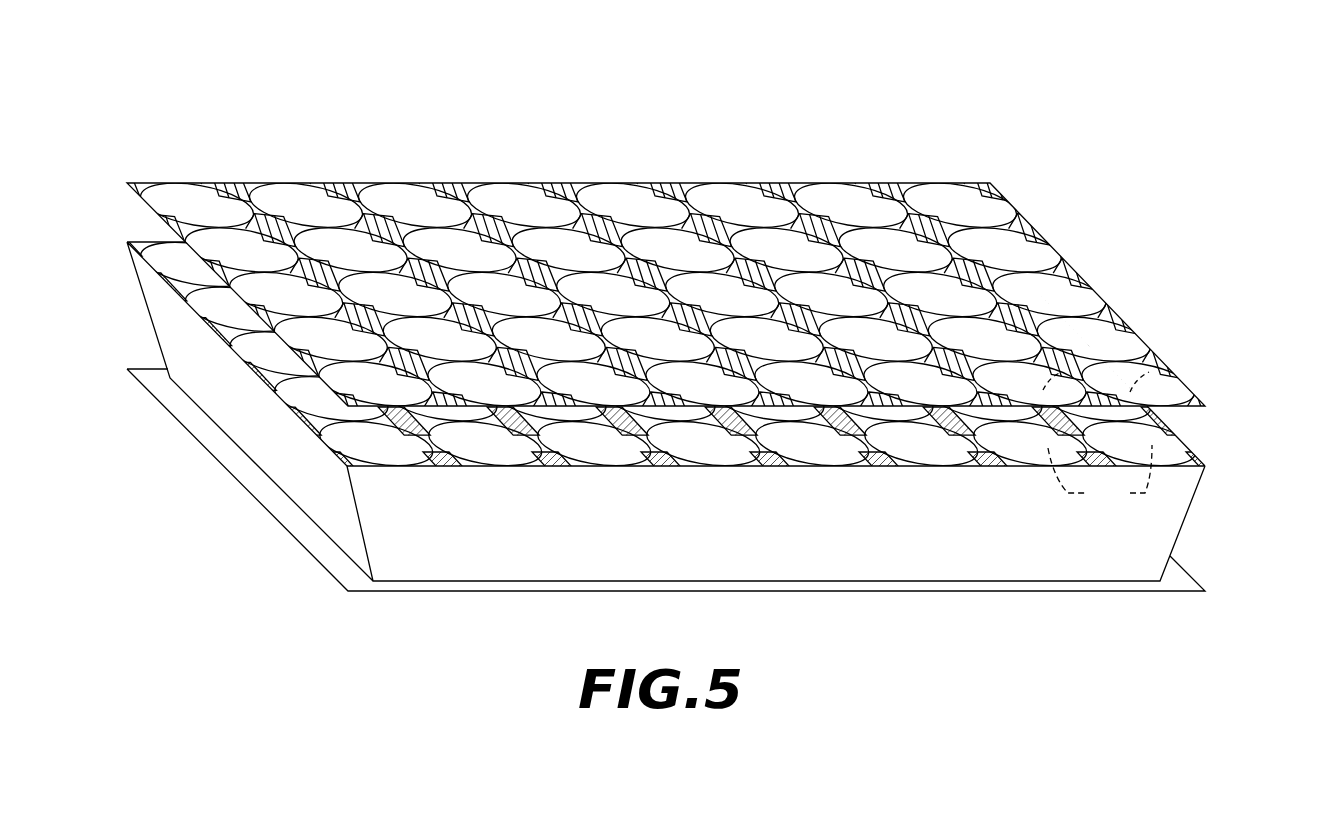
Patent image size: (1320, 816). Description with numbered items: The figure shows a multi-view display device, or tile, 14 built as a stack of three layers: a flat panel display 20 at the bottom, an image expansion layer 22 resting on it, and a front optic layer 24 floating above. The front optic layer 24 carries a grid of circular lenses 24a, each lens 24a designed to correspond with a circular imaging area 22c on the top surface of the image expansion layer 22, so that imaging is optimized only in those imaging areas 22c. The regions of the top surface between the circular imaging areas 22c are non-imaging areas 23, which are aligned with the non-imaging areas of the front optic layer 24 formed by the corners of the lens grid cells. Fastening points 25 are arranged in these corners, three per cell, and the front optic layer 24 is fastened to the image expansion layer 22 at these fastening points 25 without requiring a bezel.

The multi-view (MV) display device (tile) 14 is at (161, 133).
The flat panel display (FPD) 20 is at (1183, 578).
The image expansion layer 22 is at (1180, 520).
The imaging areas 22c is at (660, 369).
The non-imaging areas 23 is at (1153, 415).
The front optic layer 24 is at (1218, 396).
The lens 24a is at (1137, 368).
The fastening points 25 is at (600, 227).